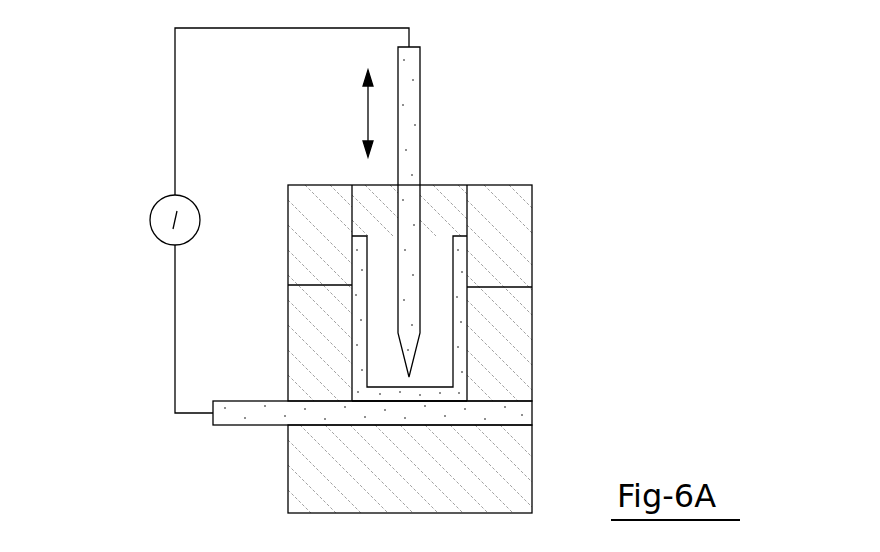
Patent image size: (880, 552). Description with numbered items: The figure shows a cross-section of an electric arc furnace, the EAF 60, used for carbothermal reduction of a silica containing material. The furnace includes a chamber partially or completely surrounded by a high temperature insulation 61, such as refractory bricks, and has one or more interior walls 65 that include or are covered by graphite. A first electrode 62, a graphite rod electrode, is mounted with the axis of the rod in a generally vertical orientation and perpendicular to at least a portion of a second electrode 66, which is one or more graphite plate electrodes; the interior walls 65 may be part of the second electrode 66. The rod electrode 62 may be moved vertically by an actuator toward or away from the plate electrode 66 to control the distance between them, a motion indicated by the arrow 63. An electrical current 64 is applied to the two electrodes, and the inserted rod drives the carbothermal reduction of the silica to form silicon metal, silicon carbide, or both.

The electric arc furnace 60 is at (146, 61).
The high temperature insulation 61 is at (520, 185).
The first electrode 62 is at (420, 78).
The direction of motion arrow 63 is at (368, 108).
The electrical current 64 is at (186, 198).
The interior walls 65 is at (465, 313).
The second electrode 66 is at (532, 413).